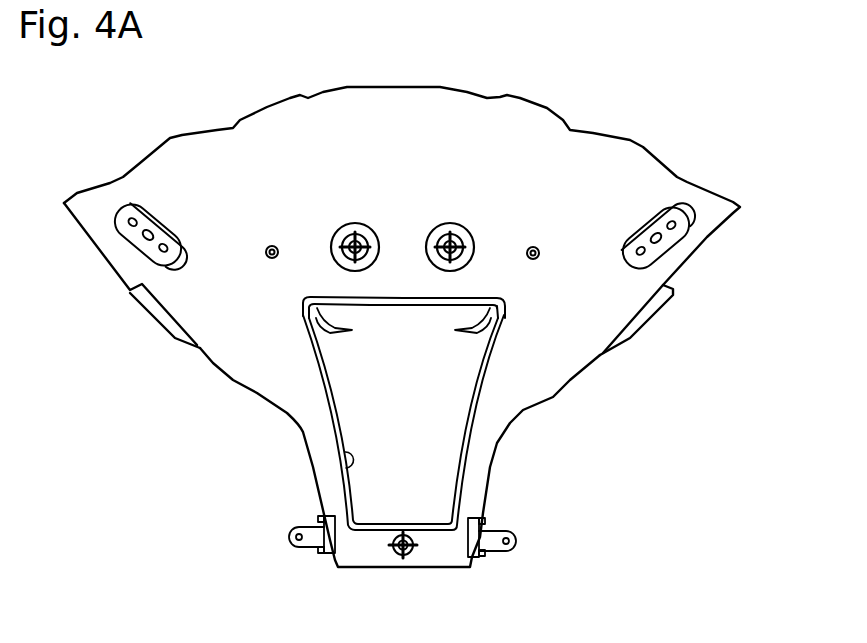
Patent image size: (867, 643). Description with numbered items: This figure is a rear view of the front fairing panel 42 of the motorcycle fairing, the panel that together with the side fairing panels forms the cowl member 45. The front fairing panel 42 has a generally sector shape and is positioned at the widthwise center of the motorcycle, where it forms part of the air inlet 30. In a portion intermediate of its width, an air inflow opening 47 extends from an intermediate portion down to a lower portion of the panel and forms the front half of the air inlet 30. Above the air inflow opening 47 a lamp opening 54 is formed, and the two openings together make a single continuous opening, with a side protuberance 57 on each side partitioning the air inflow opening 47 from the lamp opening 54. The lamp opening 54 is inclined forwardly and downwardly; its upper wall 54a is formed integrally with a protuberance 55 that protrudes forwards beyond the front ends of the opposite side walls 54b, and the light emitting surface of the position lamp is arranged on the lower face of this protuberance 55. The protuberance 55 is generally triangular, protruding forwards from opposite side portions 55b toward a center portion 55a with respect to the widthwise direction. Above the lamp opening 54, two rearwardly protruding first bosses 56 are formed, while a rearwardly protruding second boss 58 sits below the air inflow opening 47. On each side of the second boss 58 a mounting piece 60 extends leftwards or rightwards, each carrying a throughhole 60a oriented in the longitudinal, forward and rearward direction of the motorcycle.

The air inlet 30 is at (353, 417).
The front fairing panel 42 is at (402, 197).
The cowl member 45 is at (656, 112).
The air inflow opening 47 is at (350, 470).
The lamp opening 54 is at (317, 313).
The upper wall 54a is at (452, 298).
The side walls 54b is at (497, 308).
The protuberance 55 is at (407, 305).
The center portion 55a is at (404, 308).
The side portions 55b is at (458, 299).
The first boss 56 is at (443, 226).
The side protuberance 57 is at (330, 332).
The second boss 58 is at (412, 556).
The mounting pieces 60 is at (313, 547).
The throughhole 60a is at (287, 527).